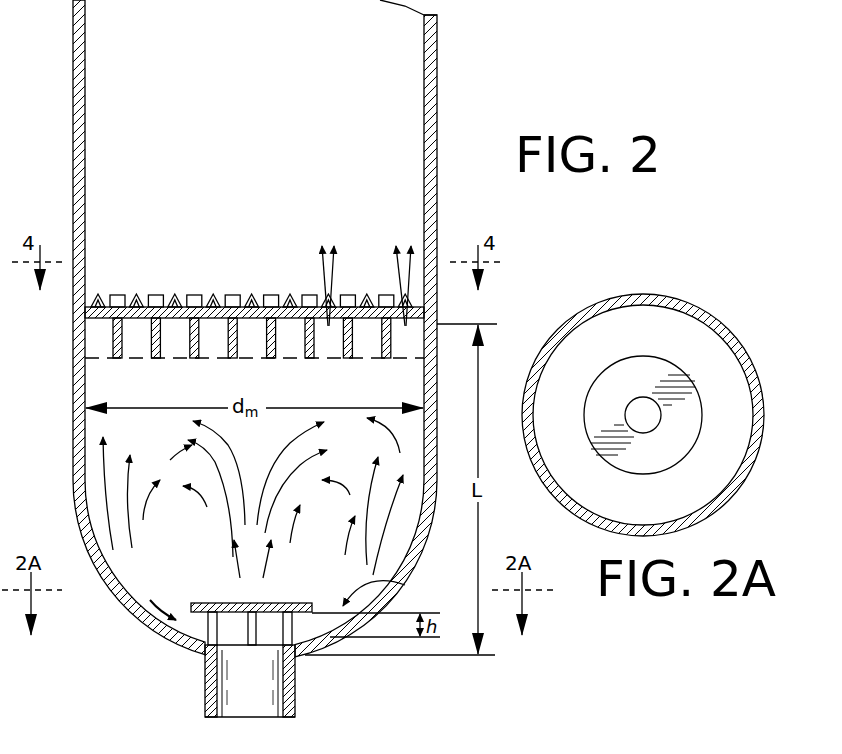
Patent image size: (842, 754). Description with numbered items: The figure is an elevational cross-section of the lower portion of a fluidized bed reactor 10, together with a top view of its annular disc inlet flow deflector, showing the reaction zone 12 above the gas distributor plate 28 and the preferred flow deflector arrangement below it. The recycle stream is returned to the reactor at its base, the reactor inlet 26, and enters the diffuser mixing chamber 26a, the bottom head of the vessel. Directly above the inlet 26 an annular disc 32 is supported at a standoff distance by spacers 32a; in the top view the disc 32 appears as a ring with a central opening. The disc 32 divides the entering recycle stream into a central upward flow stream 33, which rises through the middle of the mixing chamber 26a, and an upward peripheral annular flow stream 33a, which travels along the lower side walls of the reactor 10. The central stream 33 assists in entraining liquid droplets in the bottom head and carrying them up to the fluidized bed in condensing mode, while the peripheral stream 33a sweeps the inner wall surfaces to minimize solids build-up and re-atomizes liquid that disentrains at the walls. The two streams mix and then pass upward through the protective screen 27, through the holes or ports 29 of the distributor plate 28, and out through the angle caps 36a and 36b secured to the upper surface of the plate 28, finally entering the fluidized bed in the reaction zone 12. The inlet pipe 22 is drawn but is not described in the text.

In FIG. 2, the reactor 10 is at (438, 230).
In FIG. 2A, the reactor 10 is at (566, 320).
In FIG. 2, the reaction zone 12 is at (253, 112).
In FIG. 2, the inlet pipe 22 is at (205, 694).
In FIG. 2, the reactor inlet 26 is at (297, 660).
In FIG. 2, the diffuser mixing chamber 26a is at (150, 533).
In FIG. 2, the protective screen 27 is at (318, 358).
In FIG. 2, the gas distributor plate 28 is at (101, 295).
In FIG. 2, the holes or ports 29 is at (170, 358).
In FIG. 2, the annular disc 32 is at (296, 603).
In FIG. 2A, the annular disc 32 is at (672, 372).
In FIG. 2, the spacers 32a is at (222, 648).
In FIG. 2, the central upward flow stream 33 is at (228, 513).
In FIG. 2, the upward peripheral annular flow stream 33a is at (393, 590).
In FIG. 2, the angle cap 36a is at (141, 298).
In FIG. 2, the angle cap 36b is at (232, 296).